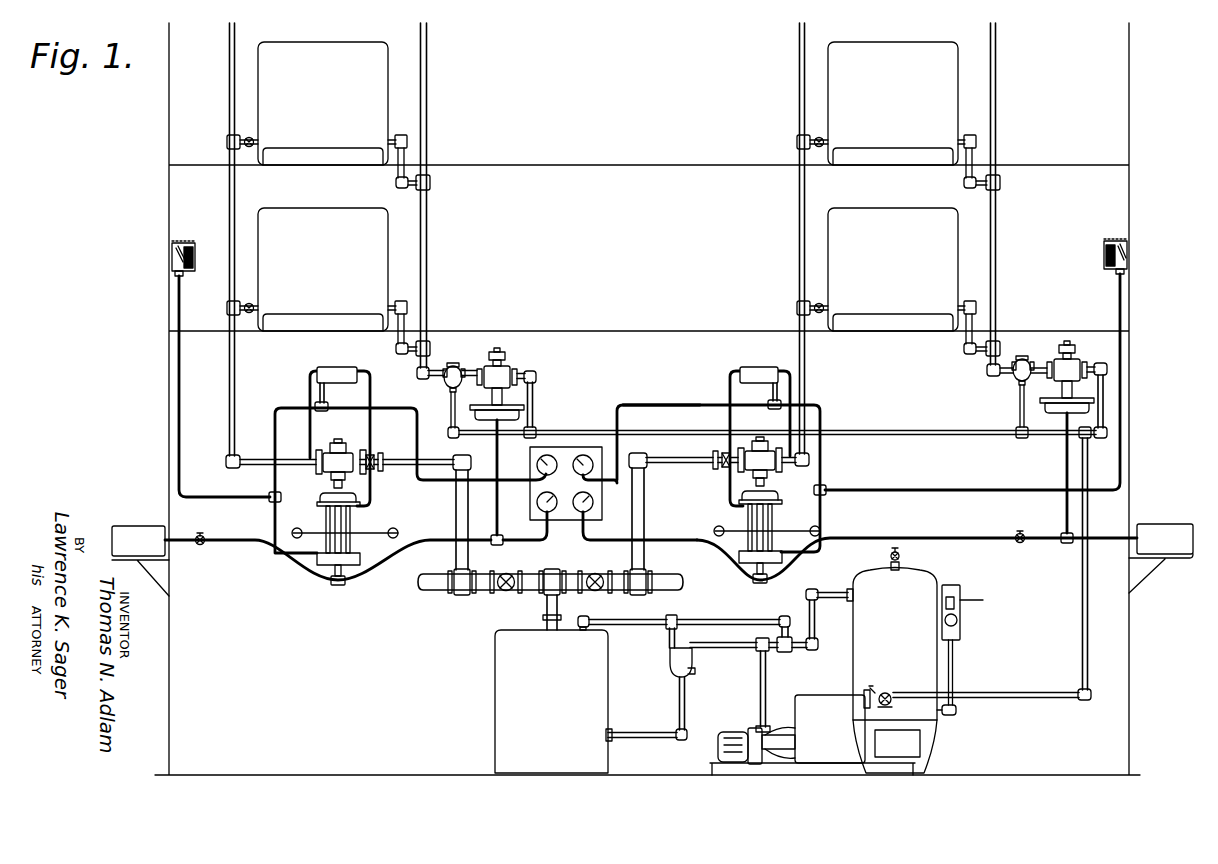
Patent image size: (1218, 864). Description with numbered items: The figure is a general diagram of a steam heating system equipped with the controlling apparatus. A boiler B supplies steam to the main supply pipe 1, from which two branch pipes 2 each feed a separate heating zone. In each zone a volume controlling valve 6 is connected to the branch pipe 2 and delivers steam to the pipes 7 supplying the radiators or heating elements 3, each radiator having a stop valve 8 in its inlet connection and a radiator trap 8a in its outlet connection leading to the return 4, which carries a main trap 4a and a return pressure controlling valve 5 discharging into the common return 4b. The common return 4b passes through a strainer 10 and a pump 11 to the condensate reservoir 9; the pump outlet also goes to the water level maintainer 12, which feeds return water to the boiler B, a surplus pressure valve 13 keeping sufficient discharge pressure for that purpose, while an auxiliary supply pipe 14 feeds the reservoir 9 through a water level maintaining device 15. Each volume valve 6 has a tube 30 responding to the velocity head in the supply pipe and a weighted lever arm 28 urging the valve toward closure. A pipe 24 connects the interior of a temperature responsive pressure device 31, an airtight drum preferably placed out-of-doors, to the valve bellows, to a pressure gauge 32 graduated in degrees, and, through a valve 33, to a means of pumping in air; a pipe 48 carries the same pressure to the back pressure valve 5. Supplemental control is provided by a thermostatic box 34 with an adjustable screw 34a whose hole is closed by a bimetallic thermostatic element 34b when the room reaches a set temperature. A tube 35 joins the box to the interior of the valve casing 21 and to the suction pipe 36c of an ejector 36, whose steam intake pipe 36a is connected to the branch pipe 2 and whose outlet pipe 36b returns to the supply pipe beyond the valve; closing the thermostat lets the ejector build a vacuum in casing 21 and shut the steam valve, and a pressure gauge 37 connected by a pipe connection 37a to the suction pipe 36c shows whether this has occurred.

The main supply pipe 1 is at (436, 594).
The branch pipe 2 is at (455, 506).
The radiator 3 is at (608, 186).
The return pipe 4 is at (418, 364).
The main trap 4a is at (453, 370).
The common return 4b is at (1089, 588).
The return pressure controlling valve 5 is at (507, 366).
The volume controlling valve 6 is at (350, 445).
The radiator supply pipe 7 is at (235, 382).
The radiator stop valve 8 is at (250, 137).
The radiator trap 8a is at (402, 134).
The condensate reservoir 9 is at (895, 660).
The strainer 10 is at (883, 692).
The pump 11 is at (812, 713).
The water level maintainer 12 is at (668, 666).
The surplus pressure valve 13 is at (790, 630).
The auxiliary supply pipe 14 is at (967, 597).
The water level maintaining device 15 is at (962, 624).
The cylindrical casing 21 is at (361, 555).
The pipe 24 is at (330, 585).
The lever arm 28 is at (384, 526).
The tube 30 is at (372, 492).
The temperature responsive pressure device 31 is at (652, 560).
The pressure gauge 32 is at (537, 507).
The valve 33 is at (201, 535).
The thermostatic box 34 is at (196, 263).
The adjustable screw 34a is at (190, 243).
The thermostatic element 34b is at (186, 274).
The tube 35 is at (181, 395).
The ejector 36 is at (338, 368).
The steam supply pipe of ejector 36a is at (371, 392).
The ejector outlet pipe 36b is at (309, 380).
The suction pipe 36c is at (273, 481).
The pressure gauge 37 is at (537, 462).
The pipe connection 37a is at (660, 398).
The pipe 48 is at (496, 500).
The boiler B is at (551, 701).